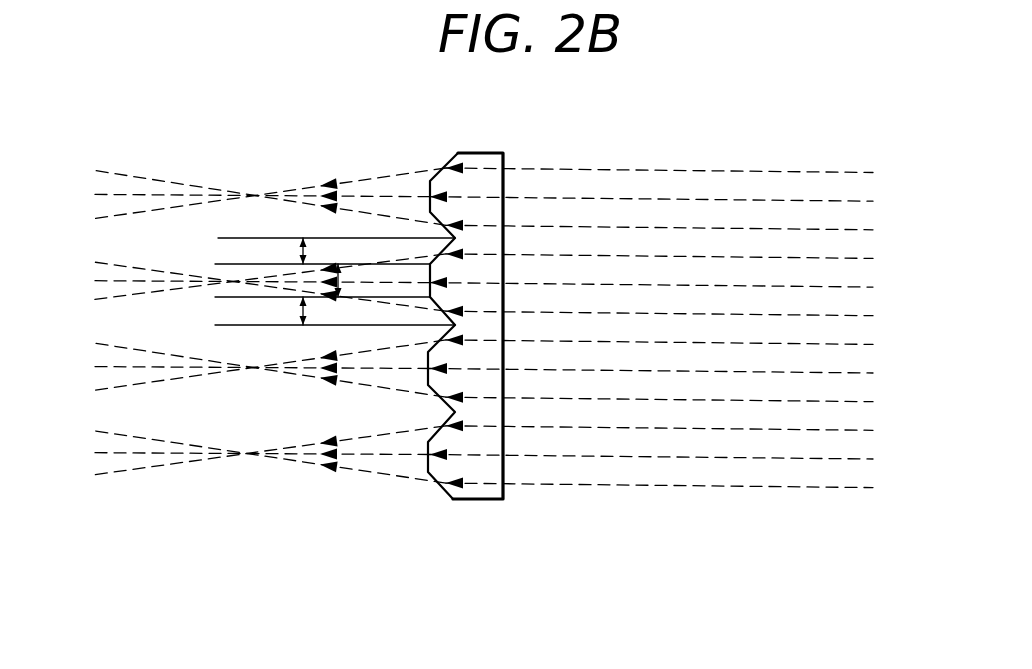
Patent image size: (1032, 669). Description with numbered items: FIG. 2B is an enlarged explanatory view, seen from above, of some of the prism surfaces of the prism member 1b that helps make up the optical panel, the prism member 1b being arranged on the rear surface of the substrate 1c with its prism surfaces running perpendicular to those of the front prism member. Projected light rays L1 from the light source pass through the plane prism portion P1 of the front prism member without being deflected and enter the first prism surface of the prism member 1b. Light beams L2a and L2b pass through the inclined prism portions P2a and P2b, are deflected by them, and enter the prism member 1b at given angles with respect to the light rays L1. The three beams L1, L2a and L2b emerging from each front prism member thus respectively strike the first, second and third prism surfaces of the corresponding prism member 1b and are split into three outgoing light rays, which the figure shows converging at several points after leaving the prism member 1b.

The substrate 1c is at (481, 151).
The prism member 1b is at (528, 568).
The projected light rays L1 is at (747, 287).
The projected light rays L2a is at (839, 315).
The projected light rays L2b is at (655, 257).
The prism portion P1 is at (343, 277).
The prism portion P2a is at (298, 308).
The prism portion P2b is at (302, 247).